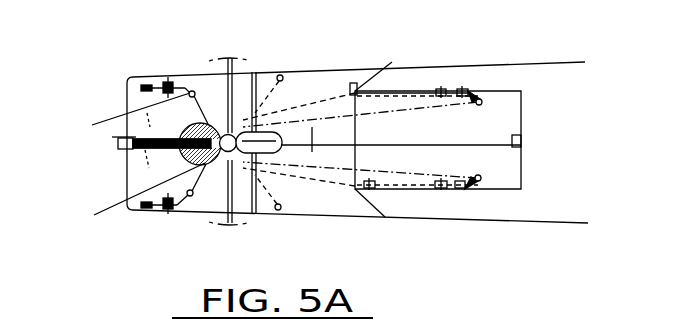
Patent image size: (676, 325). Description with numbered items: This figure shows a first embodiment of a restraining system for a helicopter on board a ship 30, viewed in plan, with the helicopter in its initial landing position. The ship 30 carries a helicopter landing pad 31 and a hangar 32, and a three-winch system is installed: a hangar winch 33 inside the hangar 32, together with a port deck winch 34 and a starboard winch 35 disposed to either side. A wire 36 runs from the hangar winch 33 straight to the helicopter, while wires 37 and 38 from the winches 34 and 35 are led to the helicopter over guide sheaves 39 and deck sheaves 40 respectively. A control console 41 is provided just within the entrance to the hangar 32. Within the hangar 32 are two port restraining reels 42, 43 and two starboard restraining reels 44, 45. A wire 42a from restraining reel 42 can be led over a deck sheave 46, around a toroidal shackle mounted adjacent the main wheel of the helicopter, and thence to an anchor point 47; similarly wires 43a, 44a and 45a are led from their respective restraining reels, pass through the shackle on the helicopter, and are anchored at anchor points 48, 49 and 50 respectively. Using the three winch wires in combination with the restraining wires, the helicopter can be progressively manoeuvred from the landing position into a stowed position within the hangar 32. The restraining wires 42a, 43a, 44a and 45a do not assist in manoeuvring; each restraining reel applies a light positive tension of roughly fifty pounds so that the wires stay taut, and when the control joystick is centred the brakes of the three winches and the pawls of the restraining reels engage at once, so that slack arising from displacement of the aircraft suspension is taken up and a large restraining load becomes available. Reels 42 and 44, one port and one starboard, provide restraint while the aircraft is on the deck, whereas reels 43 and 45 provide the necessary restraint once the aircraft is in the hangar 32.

The ship 30 is at (449, 62).
The helicopter landing pad 31 is at (134, 195).
The hangar 32 is at (521, 90).
The hangar winch 33 is at (521, 135).
The port deck winch 34 is at (167, 82).
The starboard winch 35 is at (167, 208).
The wire 36 is at (466, 143).
The wire 37 is at (205, 108).
The wire 38 is at (202, 187).
The guide sheaves 39 is at (142, 85).
The deck sheaves 40 is at (130, 113).
The control console 41 is at (373, 189).
The port restraining reel 42 is at (440, 90).
The wire 42a is at (313, 102).
The port restraining reel 43 is at (466, 90).
The wire 43a is at (403, 110).
The starboard restraining reel 44 is at (443, 189).
The wire 44a is at (311, 178).
The starboard restraining reel 45 is at (468, 189).
The wire 45a is at (367, 167).
The deck sheave 46 is at (356, 85).
The anchor point 47 is at (279, 75).
The anchor point 48 is at (482, 102).
The anchor point 49 is at (277, 210).
The anchor point 50 is at (481, 178).